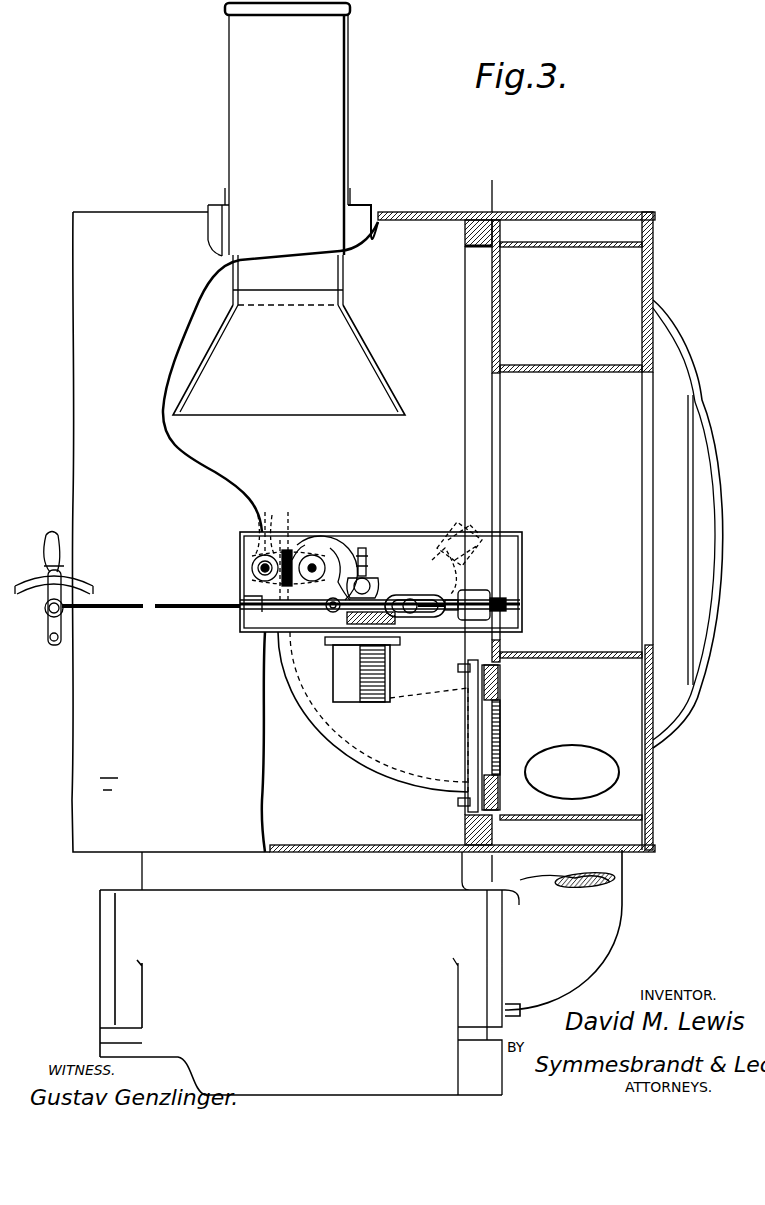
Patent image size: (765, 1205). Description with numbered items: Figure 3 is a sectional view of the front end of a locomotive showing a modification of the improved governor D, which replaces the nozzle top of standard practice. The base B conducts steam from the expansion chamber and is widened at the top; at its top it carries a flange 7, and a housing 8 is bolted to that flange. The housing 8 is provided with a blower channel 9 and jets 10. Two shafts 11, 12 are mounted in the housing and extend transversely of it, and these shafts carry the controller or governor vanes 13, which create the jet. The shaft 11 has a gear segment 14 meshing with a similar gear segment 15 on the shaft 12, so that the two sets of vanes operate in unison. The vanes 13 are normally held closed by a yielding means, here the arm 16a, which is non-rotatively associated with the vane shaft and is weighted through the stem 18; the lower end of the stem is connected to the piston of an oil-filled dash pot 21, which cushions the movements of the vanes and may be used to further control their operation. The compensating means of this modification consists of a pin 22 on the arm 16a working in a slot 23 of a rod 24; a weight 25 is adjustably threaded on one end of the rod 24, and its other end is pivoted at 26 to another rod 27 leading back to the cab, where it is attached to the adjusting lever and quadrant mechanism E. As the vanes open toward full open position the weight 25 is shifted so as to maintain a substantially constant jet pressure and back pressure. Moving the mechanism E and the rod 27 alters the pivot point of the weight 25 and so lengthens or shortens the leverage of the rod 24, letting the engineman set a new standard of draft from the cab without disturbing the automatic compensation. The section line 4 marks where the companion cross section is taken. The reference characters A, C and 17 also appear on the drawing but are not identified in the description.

The section line 4 is at (500, 531).
The flange 7 is at (240, 598).
The housing 8 is at (252, 562).
The blower channel 9 is at (258, 550).
The jets 10 is at (262, 526).
The shaft 11 is at (258, 568).
The shaft 12 is at (322, 562).
The governor vanes 13 is at (292, 548).
The gear segment 14 is at (246, 614).
The gear segment 15 is at (363, 548).
The arm 16a is at (372, 570).
The valve ball 17 is at (372, 580).
The stem 18 is at (380, 600).
The dash pot 21 is at (392, 670).
The pin 22 is at (425, 597).
The slot 23 is at (425, 618).
The rod 24 is at (362, 626).
The weight 25 is at (476, 590).
The pivot 26 is at (326, 612).
The rod 27 is at (178, 610).
The housing A is at (496, 532).
The base B is at (389, 722).
The tube C is at (289, 209).
The governor D is at (288, 545).
The adjusting lever and quadrant mechanism E is at (54, 589).